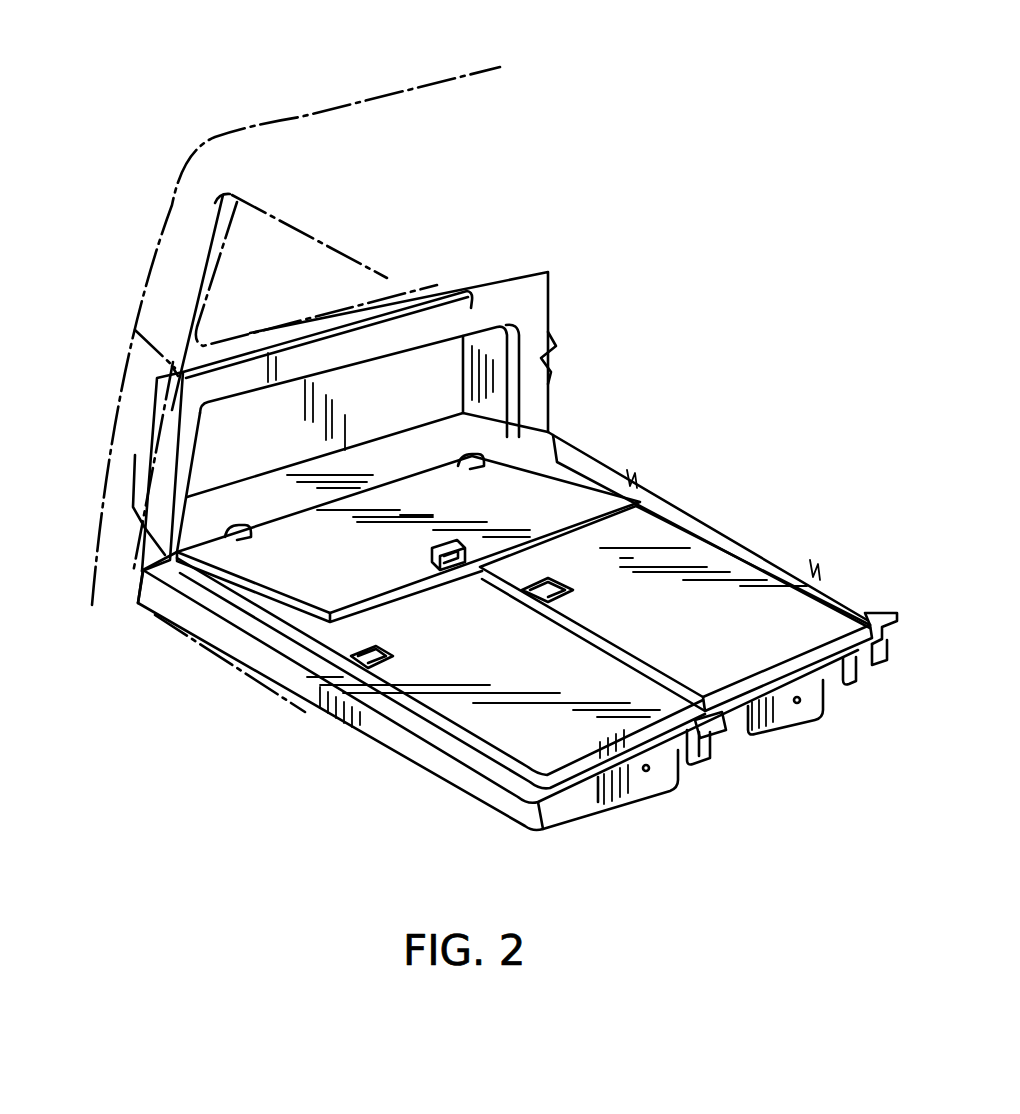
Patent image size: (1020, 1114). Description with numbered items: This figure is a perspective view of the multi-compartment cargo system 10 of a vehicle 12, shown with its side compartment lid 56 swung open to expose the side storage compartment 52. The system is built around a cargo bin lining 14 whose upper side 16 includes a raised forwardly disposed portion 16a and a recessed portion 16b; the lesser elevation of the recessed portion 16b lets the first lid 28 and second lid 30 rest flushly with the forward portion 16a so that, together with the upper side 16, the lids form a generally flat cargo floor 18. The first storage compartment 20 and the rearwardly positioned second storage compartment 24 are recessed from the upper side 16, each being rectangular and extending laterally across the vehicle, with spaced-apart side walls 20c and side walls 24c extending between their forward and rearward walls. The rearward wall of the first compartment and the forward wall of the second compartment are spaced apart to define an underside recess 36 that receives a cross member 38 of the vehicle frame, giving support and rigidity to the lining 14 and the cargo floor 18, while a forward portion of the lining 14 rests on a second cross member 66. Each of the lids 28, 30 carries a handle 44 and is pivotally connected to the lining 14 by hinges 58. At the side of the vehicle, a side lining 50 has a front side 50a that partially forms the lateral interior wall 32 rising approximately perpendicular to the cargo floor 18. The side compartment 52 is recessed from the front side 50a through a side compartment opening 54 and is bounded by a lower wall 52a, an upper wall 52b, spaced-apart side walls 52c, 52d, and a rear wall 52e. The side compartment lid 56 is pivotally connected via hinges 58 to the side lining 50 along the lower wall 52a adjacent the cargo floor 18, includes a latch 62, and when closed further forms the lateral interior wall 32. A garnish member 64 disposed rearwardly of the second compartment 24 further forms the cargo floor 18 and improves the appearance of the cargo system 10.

The multi-compartment cargo system 10 is at (287, 747).
The vehicle 12 is at (303, 133).
The cargo bin lining 14 is at (550, 837).
The upper side 16 is at (727, 700).
The forwardly disposed portion 16a is at (870, 610).
The recessed portion 16b is at (532, 790).
The cargo floor 18 is at (680, 557).
The first storage compartment 20 is at (767, 742).
The side walls 20c is at (790, 720).
The second storage compartment 24 is at (583, 813).
The side walls 24c is at (603, 797).
The first lid 28 is at (723, 597).
The second lid 30 is at (487, 717).
The lateral interior wall 32 is at (550, 380).
The underside recess 36 is at (690, 765).
The cross member 38 is at (714, 740).
The handle 44 is at (370, 665).
The side lining 50 is at (172, 480).
The front side 50a is at (548, 340).
The side compartment 52 is at (407, 372).
The lower wall 52a is at (268, 500).
The upper wall 52b is at (175, 372).
The side wall 52c is at (508, 335).
The side wall 52d is at (150, 432).
The rear wall 52e is at (372, 420).
The side compartment opening 54 is at (197, 447).
The side compartment lid 56 is at (593, 483).
The hinges 58 is at (483, 467).
The latch 62 is at (433, 565).
The garnish member 64 is at (393, 713).
The second cross member 66 is at (856, 678).